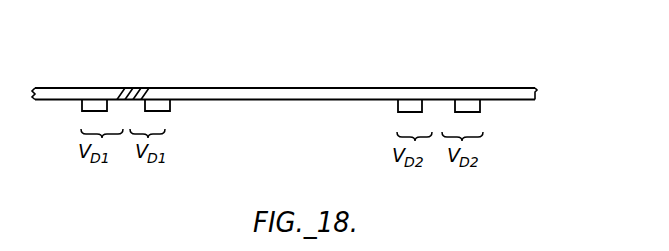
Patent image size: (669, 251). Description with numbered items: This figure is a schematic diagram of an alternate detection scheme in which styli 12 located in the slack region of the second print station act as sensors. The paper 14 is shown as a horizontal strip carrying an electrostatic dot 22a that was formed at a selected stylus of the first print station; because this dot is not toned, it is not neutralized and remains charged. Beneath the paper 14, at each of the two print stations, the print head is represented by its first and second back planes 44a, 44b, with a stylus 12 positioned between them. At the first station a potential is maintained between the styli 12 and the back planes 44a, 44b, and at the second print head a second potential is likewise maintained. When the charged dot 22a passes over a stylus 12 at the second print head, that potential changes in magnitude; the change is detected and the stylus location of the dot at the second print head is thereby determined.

The paper 14 is at (288, 88).
The electrostatic dot 22a is at (137, 88).
The first back plane 44a is at (83, 111).
The second back plane 44b is at (170, 109).
The styli 12 is at (126, 100).